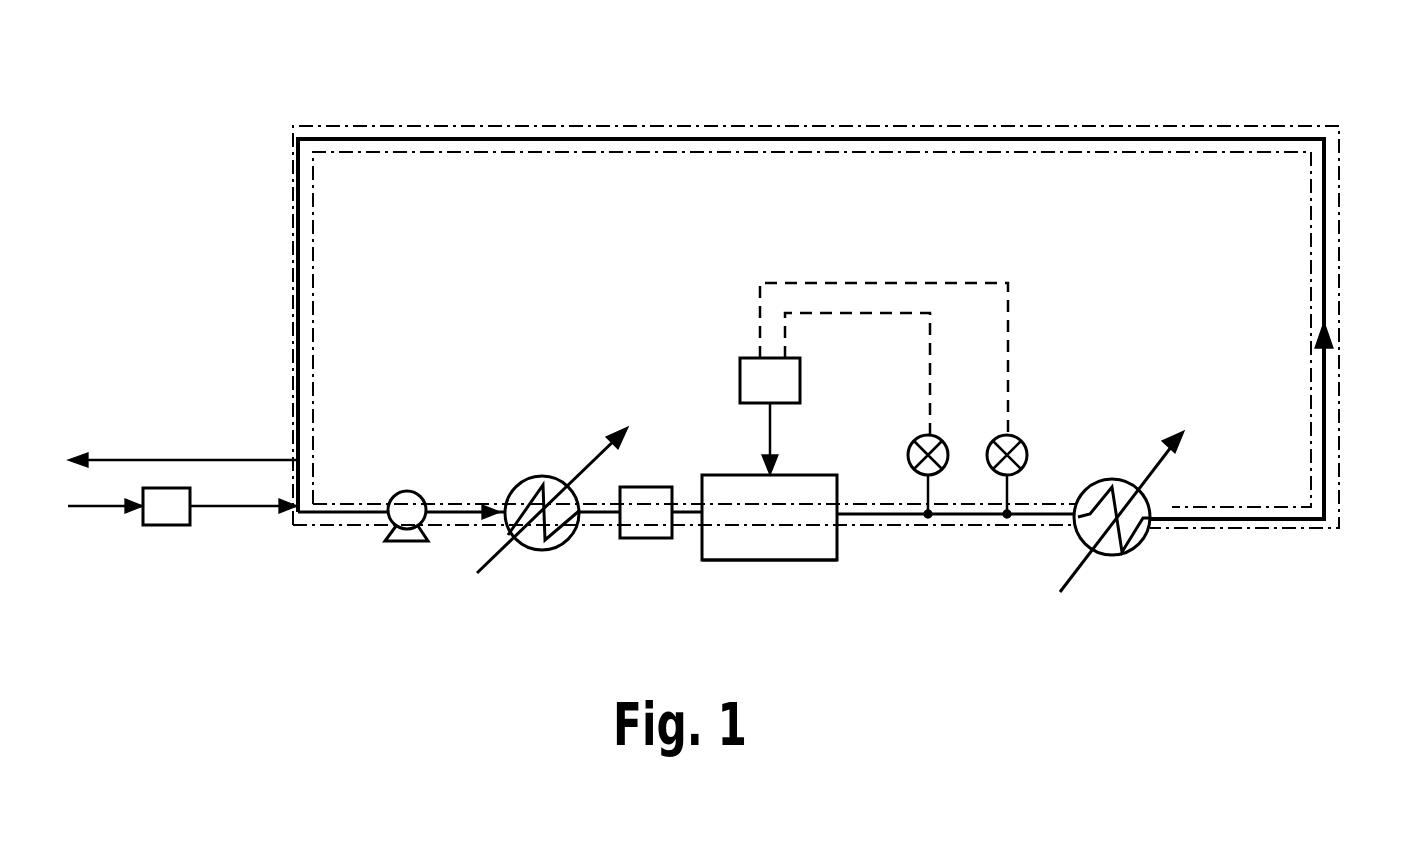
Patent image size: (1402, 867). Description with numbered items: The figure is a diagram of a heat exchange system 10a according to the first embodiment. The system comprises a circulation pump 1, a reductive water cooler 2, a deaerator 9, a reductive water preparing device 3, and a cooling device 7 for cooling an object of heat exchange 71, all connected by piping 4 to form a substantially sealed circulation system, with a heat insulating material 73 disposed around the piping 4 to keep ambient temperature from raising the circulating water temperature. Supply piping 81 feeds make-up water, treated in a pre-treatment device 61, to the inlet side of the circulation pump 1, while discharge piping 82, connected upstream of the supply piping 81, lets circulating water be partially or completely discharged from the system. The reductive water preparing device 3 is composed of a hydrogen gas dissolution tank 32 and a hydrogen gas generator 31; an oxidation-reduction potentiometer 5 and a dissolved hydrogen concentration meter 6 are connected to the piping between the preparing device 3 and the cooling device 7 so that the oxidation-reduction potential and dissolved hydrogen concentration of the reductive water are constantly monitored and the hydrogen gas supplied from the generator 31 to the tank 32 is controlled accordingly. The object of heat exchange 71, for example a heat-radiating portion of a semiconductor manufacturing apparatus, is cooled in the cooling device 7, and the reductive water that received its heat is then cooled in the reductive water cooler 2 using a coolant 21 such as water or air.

The heat exchange system 10a is at (991, 103).
The circulation pump 1 is at (388, 541).
The reductive water cooler 2 is at (552, 550).
The coolant 21 is at (600, 465).
The reductive water preparing device 3 is at (764, 561).
The hydrogen gas generator 31 is at (740, 375).
The hydrogen gas dissolution tank 32 is at (815, 553).
The piping 4 is at (1327, 460).
The oxidation-reduction potentiometer 5 is at (912, 445).
The dissolved hydrogen concentration meter 6 is at (1025, 437).
The pre-treatment device 61 is at (160, 525).
The cooling device 7 is at (1135, 553).
The object of heat exchange 71 is at (1150, 448).
The heat insulating material 73 is at (316, 271).
The supply piping 81 is at (233, 506).
The discharge piping 82 is at (228, 460).
The deaerator 9 is at (658, 538).